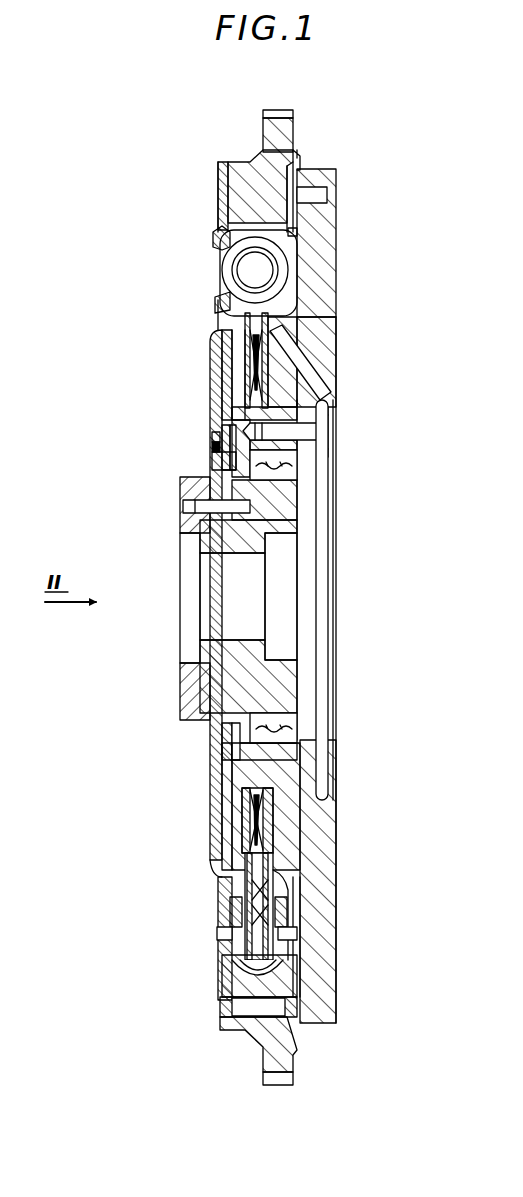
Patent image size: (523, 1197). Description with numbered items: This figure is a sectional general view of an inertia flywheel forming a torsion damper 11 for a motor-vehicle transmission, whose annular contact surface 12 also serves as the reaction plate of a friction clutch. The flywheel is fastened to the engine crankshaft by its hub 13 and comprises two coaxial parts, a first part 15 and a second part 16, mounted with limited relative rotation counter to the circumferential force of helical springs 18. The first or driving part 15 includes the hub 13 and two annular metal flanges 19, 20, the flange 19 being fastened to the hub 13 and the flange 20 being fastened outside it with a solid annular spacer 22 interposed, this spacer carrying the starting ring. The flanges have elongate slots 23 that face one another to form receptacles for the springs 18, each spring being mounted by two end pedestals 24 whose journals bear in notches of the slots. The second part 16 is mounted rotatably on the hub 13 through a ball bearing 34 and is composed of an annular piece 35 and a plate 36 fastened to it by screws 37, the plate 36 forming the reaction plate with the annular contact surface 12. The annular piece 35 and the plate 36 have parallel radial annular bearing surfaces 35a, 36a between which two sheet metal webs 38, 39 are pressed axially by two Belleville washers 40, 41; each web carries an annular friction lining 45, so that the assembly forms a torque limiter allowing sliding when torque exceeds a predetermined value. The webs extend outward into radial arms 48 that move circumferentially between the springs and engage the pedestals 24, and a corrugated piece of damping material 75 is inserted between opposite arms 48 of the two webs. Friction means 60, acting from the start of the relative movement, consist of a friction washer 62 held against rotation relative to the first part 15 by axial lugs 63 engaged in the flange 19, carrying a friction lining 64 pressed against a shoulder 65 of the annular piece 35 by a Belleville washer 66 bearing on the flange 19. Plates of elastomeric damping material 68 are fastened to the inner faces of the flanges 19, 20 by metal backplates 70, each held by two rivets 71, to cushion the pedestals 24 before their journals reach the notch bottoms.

The torsion damper 11 is at (136, 624).
The annular contact surface 12 is at (339, 207).
The hub 13 is at (192, 541).
The first part 15 is at (216, 207).
The second part 16 is at (234, 327).
The helical springs 18 is at (222, 270).
The flange 19 is at (216, 170).
The flange 20 is at (303, 144).
The annular spacer 22 is at (248, 150).
The elongate slots 23 is at (214, 238).
The end pedestals 24 is at (212, 287).
The ball bearing 34 is at (304, 471).
The annular piece 35 is at (209, 359).
The radial annular bearing surface 35a is at (247, 383).
The plate 36 is at (339, 337).
The radial annular bearing surface 36a is at (299, 364).
The screws 37 is at (300, 432).
The web 38 is at (242, 878).
The web 39 is at (286, 877).
The Belleville washer 40 is at (243, 794).
The Belleville washer 41 is at (242, 840).
The annular friction lining 45 is at (242, 810).
The radial arms 48 is at (228, 998).
The friction means 60 is at (207, 446).
The friction washer 62 is at (230, 464).
The axial lugs 63 is at (213, 434).
The friction lining 64 is at (283, 744).
The shoulder 65 is at (231, 759).
The Belleville washer 66 is at (219, 742).
The plates of damping material 68 is at (230, 897).
The metal backplate 70 is at (247, 965).
The rivets 71 is at (217, 933).
The piece of damping material 75 is at (258, 1004).